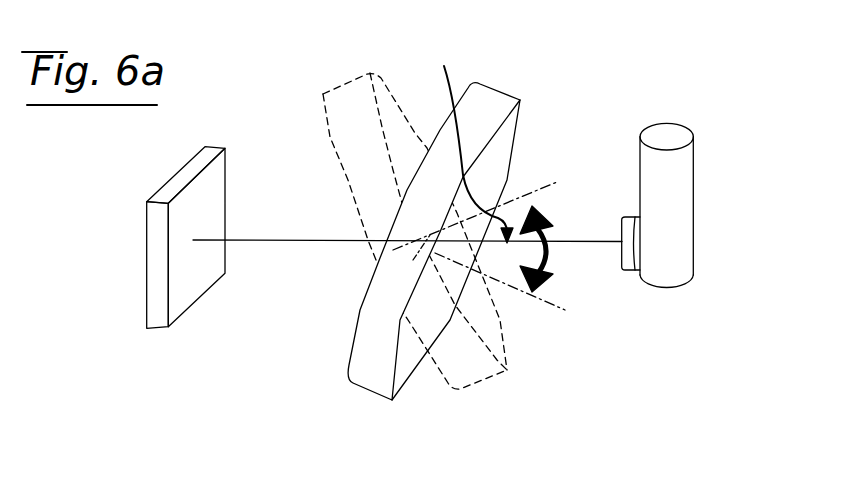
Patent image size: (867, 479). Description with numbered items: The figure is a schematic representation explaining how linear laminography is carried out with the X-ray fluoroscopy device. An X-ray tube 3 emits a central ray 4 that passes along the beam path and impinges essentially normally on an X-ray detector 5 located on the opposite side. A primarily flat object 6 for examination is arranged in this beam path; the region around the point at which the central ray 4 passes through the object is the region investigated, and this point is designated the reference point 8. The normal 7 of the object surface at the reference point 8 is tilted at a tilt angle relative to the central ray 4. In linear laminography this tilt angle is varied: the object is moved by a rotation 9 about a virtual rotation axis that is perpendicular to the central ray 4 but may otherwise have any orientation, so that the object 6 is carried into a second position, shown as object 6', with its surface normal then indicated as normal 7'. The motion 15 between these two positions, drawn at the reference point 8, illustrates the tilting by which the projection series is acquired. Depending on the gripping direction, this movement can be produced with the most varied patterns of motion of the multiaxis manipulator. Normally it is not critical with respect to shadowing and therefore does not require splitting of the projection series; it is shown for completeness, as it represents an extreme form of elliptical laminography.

The X-ray tube 3 is at (677, 200).
The central ray 4 is at (285, 240).
The X-ray detector 5 is at (180, 282).
The object 6 is at (382, 231).
The object 6' is at (380, 271).
The normal 7 is at (475, 198).
The normal 7' is at (512, 306).
The reference point 8 is at (427, 238).
The rotation 9 is at (460, 128).
The motion 15 is at (557, 249).